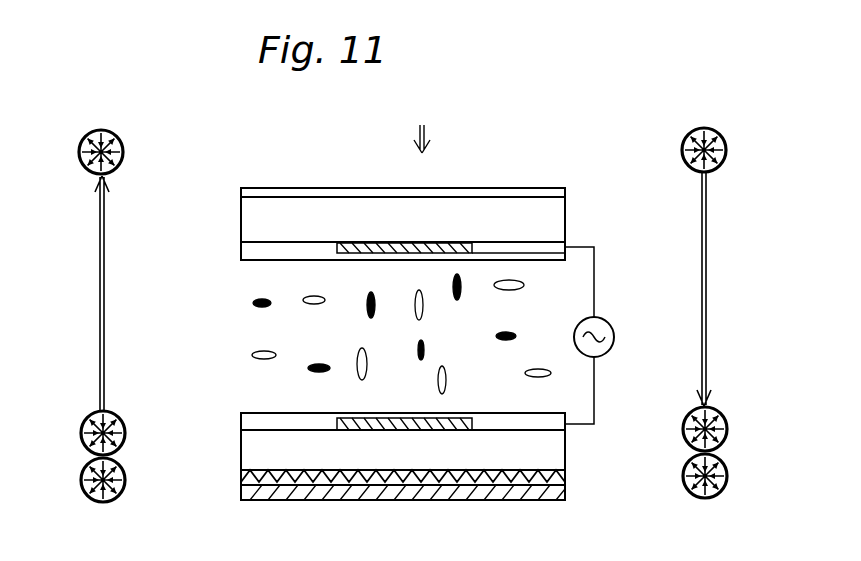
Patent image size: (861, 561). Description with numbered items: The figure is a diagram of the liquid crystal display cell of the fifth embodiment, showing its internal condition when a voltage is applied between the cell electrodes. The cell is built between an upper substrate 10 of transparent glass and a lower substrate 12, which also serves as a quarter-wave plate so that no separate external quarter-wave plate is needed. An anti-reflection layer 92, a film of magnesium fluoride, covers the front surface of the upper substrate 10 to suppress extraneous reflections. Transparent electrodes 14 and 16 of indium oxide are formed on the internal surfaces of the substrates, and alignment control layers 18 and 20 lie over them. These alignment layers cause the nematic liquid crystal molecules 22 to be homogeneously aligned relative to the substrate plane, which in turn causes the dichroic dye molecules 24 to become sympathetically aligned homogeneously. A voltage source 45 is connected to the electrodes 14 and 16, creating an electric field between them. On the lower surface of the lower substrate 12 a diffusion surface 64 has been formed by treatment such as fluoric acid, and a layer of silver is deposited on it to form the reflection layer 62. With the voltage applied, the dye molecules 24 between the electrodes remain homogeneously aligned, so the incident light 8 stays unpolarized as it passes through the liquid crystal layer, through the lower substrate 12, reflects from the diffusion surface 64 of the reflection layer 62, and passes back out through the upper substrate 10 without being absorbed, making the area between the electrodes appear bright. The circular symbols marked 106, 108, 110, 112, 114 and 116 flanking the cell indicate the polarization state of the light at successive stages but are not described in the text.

The incident light 8 is at (422, 124).
The upper substrate 10 is at (248, 222).
The lower substrate 12 is at (252, 461).
The transparent electrode 14 is at (337, 254).
The transparent electrode 16 is at (337, 418).
The alignment control layer 18 is at (245, 256).
The alignment control layer 20 is at (250, 421).
The nematic liquid crystal molecules 22 is at (252, 355).
The dichroic dye molecules 24 is at (253, 304).
The voltage source 45 is at (615, 338).
The reflection layer 62 is at (320, 498).
The diffusion surface 64 is at (240, 478).
The anti-reflection layer 92 is at (241, 193).
The circular polarizer representation 106 is at (727, 150).
The circular polarizer representation 108 is at (728, 426).
The circular polarizer representation 110 is at (728, 472).
The circular polarizer representation 112 is at (83, 470).
The circular polarizer representation 114 is at (83, 422).
The circular polarizer representation 116 is at (83, 138).